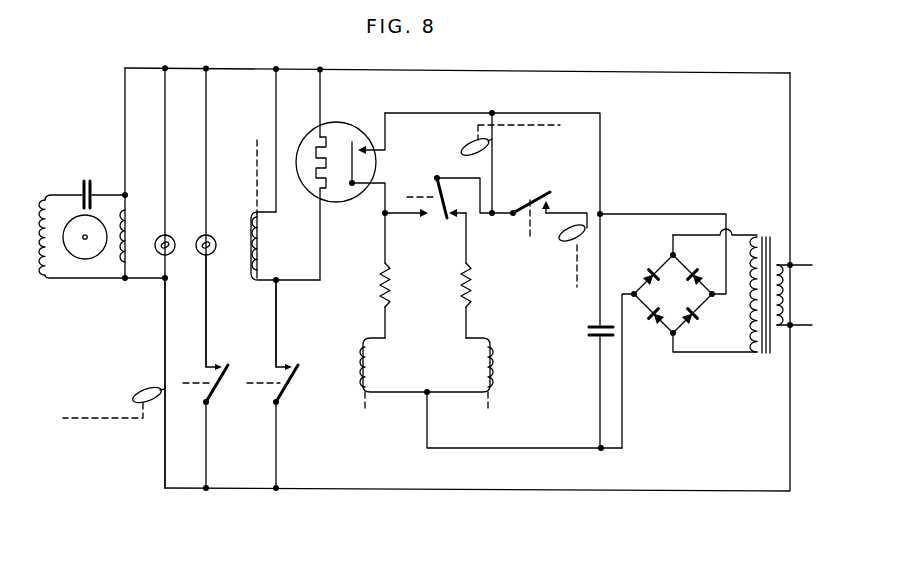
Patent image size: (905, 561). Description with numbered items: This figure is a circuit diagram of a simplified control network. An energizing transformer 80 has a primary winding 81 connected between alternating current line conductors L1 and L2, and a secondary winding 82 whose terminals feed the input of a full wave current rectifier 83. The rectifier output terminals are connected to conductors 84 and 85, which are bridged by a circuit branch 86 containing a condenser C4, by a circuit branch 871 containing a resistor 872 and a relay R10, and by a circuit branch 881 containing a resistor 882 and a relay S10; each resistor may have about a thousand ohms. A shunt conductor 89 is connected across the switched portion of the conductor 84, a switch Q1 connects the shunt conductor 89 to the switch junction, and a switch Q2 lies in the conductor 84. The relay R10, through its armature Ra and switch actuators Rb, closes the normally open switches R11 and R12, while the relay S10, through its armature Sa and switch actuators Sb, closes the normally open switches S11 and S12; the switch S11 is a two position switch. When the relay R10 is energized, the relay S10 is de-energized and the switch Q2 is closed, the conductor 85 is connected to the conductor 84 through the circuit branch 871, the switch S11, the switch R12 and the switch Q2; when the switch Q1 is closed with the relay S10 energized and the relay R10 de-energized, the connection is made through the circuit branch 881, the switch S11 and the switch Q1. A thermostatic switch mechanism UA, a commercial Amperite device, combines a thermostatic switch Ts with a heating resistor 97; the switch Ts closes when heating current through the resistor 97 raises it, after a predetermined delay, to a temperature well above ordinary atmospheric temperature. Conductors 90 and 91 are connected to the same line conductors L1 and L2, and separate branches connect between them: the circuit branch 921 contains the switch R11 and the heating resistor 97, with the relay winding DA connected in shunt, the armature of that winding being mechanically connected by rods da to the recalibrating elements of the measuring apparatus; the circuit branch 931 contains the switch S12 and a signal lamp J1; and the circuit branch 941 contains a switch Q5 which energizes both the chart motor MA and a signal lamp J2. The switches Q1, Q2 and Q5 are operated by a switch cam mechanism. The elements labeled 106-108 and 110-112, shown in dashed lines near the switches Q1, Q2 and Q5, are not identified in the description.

The conductor 90 is at (718, 73).
The conductor 91 is at (434, 490).
The chart motor MA is at (90, 250).
The signal lamp J2 is at (160, 237).
The signal lamp J1 is at (201, 237).
The relay winding DA is at (263, 247).
The rods da is at (255, 172).
The thermostatic switch mechanism UA is at (340, 123).
The heating resistor 97 is at (316, 152).
The thermostatic switch Ts is at (353, 168).
The shunt conductor 89 is at (600, 148).
The switch Q1 is at (468, 142).
The heating elements 106-108 is at (504, 125).
The switch S11 is at (445, 220).
The switch actuators Sb is at (416, 197).
The switch R12 is at (542, 198).
The switch actuators Rb is at (530, 233).
The switch Q2 is at (567, 243).
The conductor 84 is at (682, 214).
The resistor 882 is at (391, 285).
The circuit branch 881 is at (386, 320).
The resistor 872 is at (472, 285).
The circuit branch 871 is at (468, 320).
The relay S10 is at (371, 357).
The relay R10 is at (482, 357).
The armature Sa is at (367, 411).
The armature Ra is at (488, 411).
The conductor 85 is at (510, 448).
The circuit branch 86 is at (599, 410).
The condenser C4 is at (588, 329).
The full wave current rectifier 83 is at (686, 304).
The secondary winding 82 is at (750, 292).
The energizing transformer 80 is at (764, 356).
The primary winding 81 is at (784, 297).
The line conductor L1 is at (803, 265).
The line conductor L2 is at (803, 325).
The switch Q5 is at (141, 389).
The heating elements 110-112 is at (128, 418).
The switch S12 is at (222, 382).
The switch R11 is at (292, 381).
The circuit branch 941 is at (164, 462).
The circuit branch 931 is at (208, 462).
The circuit branch 921 is at (278, 462).